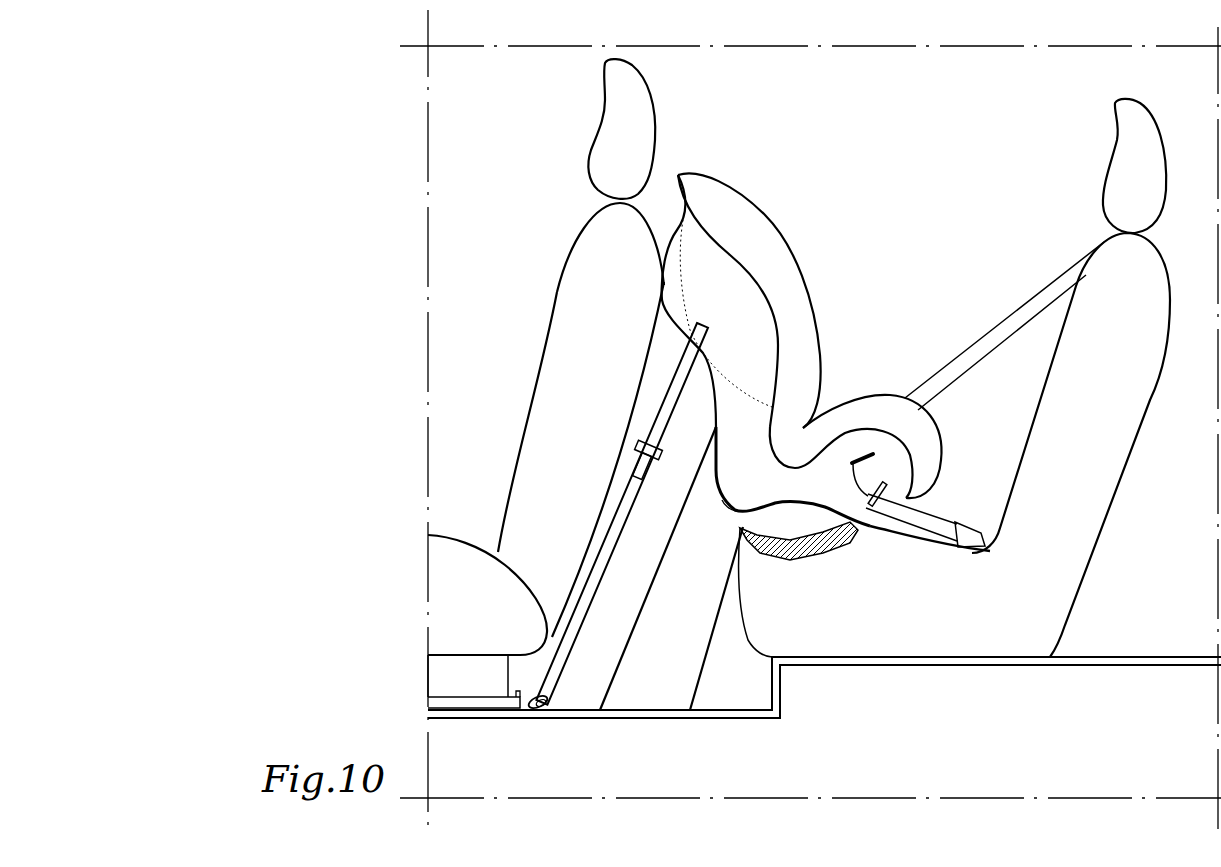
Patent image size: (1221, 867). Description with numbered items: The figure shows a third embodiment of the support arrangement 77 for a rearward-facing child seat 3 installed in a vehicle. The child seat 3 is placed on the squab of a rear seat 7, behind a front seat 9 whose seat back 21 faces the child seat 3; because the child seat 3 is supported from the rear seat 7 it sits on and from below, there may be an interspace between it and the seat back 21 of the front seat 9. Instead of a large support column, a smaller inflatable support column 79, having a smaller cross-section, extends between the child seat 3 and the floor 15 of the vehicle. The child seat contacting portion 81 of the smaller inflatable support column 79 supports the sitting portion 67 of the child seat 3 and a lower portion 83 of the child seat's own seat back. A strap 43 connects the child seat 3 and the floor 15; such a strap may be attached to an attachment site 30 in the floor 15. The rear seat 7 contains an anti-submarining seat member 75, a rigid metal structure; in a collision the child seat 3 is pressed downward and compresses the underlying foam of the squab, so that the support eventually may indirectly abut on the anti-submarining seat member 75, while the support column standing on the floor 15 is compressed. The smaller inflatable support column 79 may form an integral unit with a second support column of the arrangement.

The child seat 3 is at (830, 253).
The rear seat 7 is at (925, 592).
The front seat 9 is at (480, 606).
The floor 15 is at (712, 718).
The seat back 21 is at (600, 366).
The attachment site 30 is at (527, 710).
The strap 43 is at (617, 530).
The sitting portion 67 is at (813, 512).
The anti-submarining seat member 75 is at (802, 555).
The support arrangement 77 is at (972, 150).
The smaller inflatable support column 79 is at (718, 657).
The child seat contacting portion 81 is at (736, 511).
The lower portion 83 is at (722, 492).